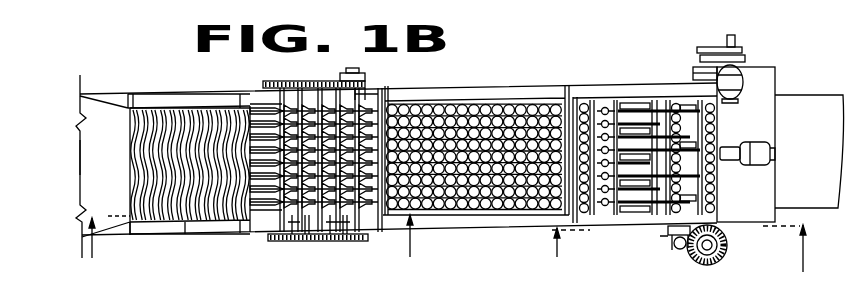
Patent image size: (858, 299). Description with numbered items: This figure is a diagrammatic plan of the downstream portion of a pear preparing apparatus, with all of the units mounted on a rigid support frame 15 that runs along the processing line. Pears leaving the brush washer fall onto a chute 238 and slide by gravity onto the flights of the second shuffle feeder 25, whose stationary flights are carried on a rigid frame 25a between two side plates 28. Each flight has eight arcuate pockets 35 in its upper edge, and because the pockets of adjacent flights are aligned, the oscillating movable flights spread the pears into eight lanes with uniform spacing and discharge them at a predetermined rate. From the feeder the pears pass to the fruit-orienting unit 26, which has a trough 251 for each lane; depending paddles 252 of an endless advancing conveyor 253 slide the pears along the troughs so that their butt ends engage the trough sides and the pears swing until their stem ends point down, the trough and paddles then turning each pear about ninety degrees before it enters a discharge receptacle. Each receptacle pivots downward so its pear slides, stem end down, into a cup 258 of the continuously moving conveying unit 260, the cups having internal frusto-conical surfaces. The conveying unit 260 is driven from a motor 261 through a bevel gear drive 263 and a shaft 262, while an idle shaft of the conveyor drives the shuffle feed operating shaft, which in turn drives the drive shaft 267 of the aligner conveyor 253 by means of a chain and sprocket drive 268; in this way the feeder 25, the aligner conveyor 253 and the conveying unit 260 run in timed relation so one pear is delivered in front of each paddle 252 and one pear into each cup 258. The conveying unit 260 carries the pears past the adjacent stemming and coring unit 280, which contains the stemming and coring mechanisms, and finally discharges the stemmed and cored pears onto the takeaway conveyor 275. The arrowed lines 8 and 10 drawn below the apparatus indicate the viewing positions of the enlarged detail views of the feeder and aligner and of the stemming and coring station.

The support frame 15 is at (597, 89).
The second shuffle feeder 25 is at (161, 107).
The rigid frame 25a is at (138, 237).
The fruit-orienting unit 26 is at (273, 241).
The side plates 28 is at (182, 235).
The arcuate pockets 35 is at (130, 190).
The chute 238 is at (80, 157).
The troughs 251 is at (260, 222).
The paddles 252 is at (352, 236).
The endless advancing conveyor 253 is at (286, 80).
The cup 258 is at (508, 213).
The conveying unit 260 is at (446, 105).
The motor 261 is at (742, 80).
The shaft 262 is at (667, 236).
The bevel gear drive 263 is at (688, 248).
The drive shaft 267 is at (366, 90).
The chain and sprocket drive 268 is at (360, 74).
The takeaway conveyor 275 is at (825, 125).
The stemming and coring unit 280 is at (612, 103).
The section line 8 is at (251, 242).
The section line 10 is at (684, 248).